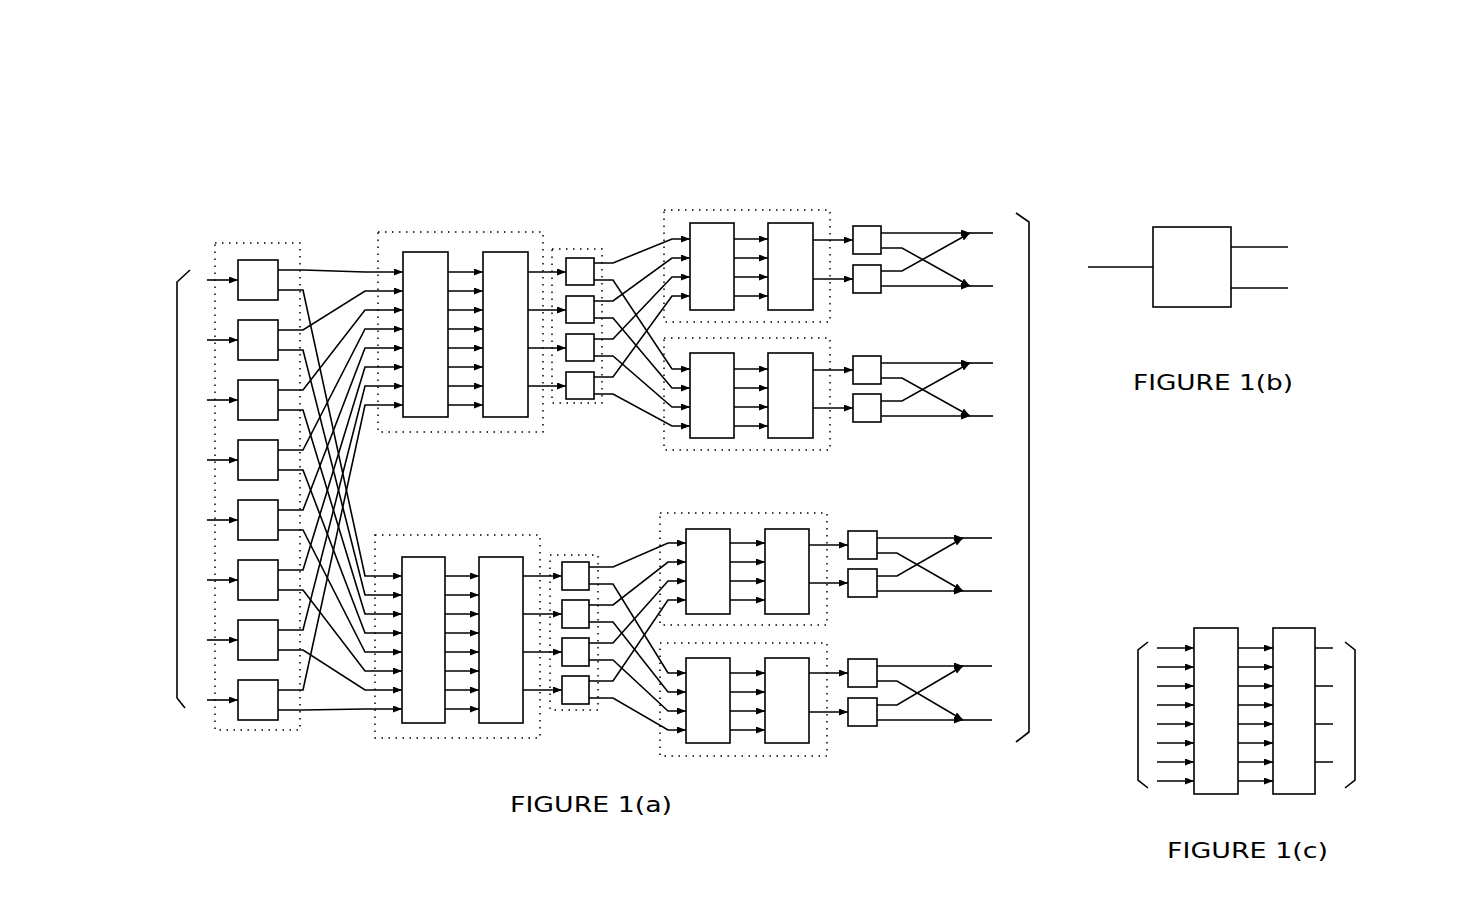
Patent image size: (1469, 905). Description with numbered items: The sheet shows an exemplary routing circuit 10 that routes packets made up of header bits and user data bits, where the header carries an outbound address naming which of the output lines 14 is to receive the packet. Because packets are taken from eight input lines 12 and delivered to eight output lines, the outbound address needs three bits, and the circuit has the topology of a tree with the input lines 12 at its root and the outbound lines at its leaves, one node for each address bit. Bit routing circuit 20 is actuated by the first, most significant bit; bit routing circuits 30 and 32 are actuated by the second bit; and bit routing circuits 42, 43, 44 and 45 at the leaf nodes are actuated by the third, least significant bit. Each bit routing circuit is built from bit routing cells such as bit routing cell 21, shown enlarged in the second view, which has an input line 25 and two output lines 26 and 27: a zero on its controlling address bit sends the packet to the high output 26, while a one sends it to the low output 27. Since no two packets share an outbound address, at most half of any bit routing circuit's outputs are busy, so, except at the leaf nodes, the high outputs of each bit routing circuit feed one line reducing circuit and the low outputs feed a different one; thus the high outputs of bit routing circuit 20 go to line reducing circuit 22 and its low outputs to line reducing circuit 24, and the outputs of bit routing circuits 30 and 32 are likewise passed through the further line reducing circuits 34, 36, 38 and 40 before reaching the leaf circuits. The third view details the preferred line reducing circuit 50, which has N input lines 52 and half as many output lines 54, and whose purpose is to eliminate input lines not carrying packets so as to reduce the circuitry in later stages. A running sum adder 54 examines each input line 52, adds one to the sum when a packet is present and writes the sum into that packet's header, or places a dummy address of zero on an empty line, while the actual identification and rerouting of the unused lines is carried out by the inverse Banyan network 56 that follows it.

In FIG. 1A, the routing circuit 10 is at (326, 141).
In FIG. 1A, the input lines 12 is at (170, 488).
In FIG. 1A, the output lines 14 is at (1029, 478).
In FIG. 1A, the bit routing circuit 20 is at (238, 252).
In FIG. 1A, the bit routing cell 21 is at (258, 708).
In FIG. 1B, the bit routing cell 21 is at (1170, 246).
In FIG. 1A, the line reducing circuit 22 is at (507, 233).
In FIG. 1A, the line reducing circuit 24 is at (462, 730).
In FIG. 1B, the input line 25 is at (1103, 250).
In FIG. 1B, the output line 26 is at (1269, 240).
In FIG. 1B, the output line 27 is at (1269, 297).
In FIG. 1A, the bit routing circuit 30 is at (557, 400).
In FIG. 1A, the bit routing circuit 32 is at (555, 560).
In FIG. 1A, the line reducer 34 is at (745, 215).
In FIG. 1A, the line reducer 36 is at (757, 438).
In FIG. 1A, the line reducer 38 is at (747, 522).
In FIG. 1A, the line reducer 40 is at (745, 745).
In FIG. 1A, the bit routing circuit 42 is at (872, 235).
In FIG. 1A, the bit routing circuit 43 is at (872, 363).
In FIG. 1A, the bit routing circuit 44 is at (867, 538).
In FIG. 1A, the bit routing circuit 45 is at (863, 672).
In FIG. 1C, the line reducing circuit 50 is at (1380, 825).
In FIG. 1C, the input lines 52 is at (1138, 715).
In FIG. 1C, the running sum adder 54 is at (1220, 637).
In FIG. 1C, the inverse banyan network 56 is at (1300, 645).